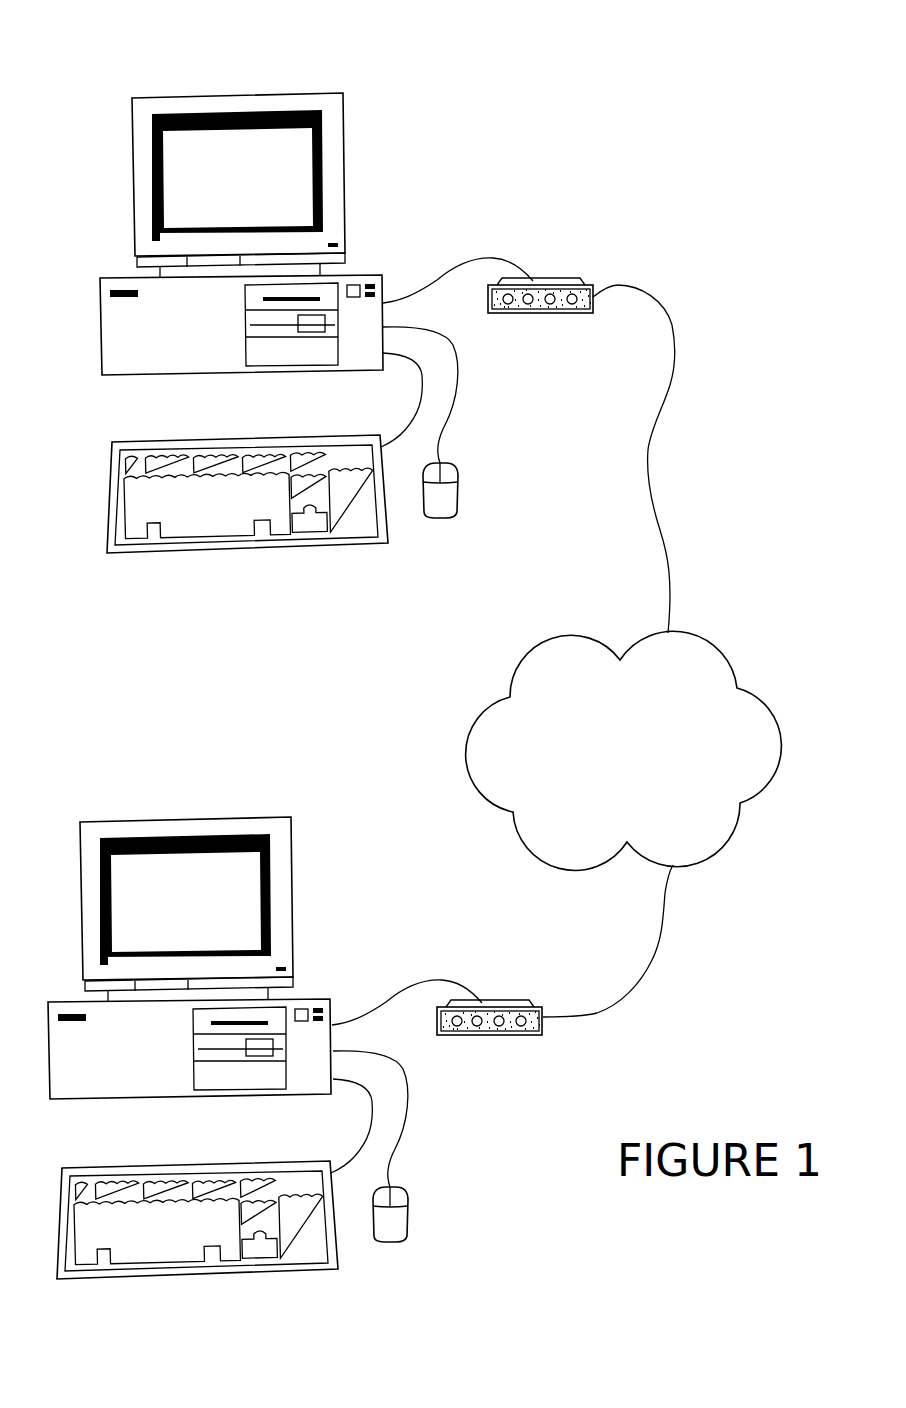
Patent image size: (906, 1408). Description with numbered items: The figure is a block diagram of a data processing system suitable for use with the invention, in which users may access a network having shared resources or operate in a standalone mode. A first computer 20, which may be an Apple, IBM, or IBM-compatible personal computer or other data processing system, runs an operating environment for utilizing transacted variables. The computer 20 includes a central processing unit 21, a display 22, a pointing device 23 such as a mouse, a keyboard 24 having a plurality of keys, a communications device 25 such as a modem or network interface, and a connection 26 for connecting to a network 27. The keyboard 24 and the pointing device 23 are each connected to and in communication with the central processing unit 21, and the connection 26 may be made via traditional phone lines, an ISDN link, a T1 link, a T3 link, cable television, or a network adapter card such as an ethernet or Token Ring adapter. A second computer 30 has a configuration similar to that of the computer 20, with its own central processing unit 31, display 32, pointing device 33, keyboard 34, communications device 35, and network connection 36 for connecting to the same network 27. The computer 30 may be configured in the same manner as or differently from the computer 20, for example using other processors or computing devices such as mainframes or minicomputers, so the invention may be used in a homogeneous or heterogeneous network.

The computer 20 is at (500, 88).
The central processing unit 21 is at (368, 274).
The display 22 is at (290, 93).
The pointing device 23 is at (455, 477).
The keyboard 24 is at (247, 550).
The communications device 25 is at (560, 277).
The connection 26 is at (673, 325).
The network 27 is at (568, 635).
The computer 30 is at (165, 760).
The central processing unit 31 is at (316, 998).
The display 32 is at (240, 817).
The pointing device 33 is at (408, 1198).
The keyboard 34 is at (197, 1275).
The communications device 35 is at (507, 998).
The network connection 36 is at (597, 1015).